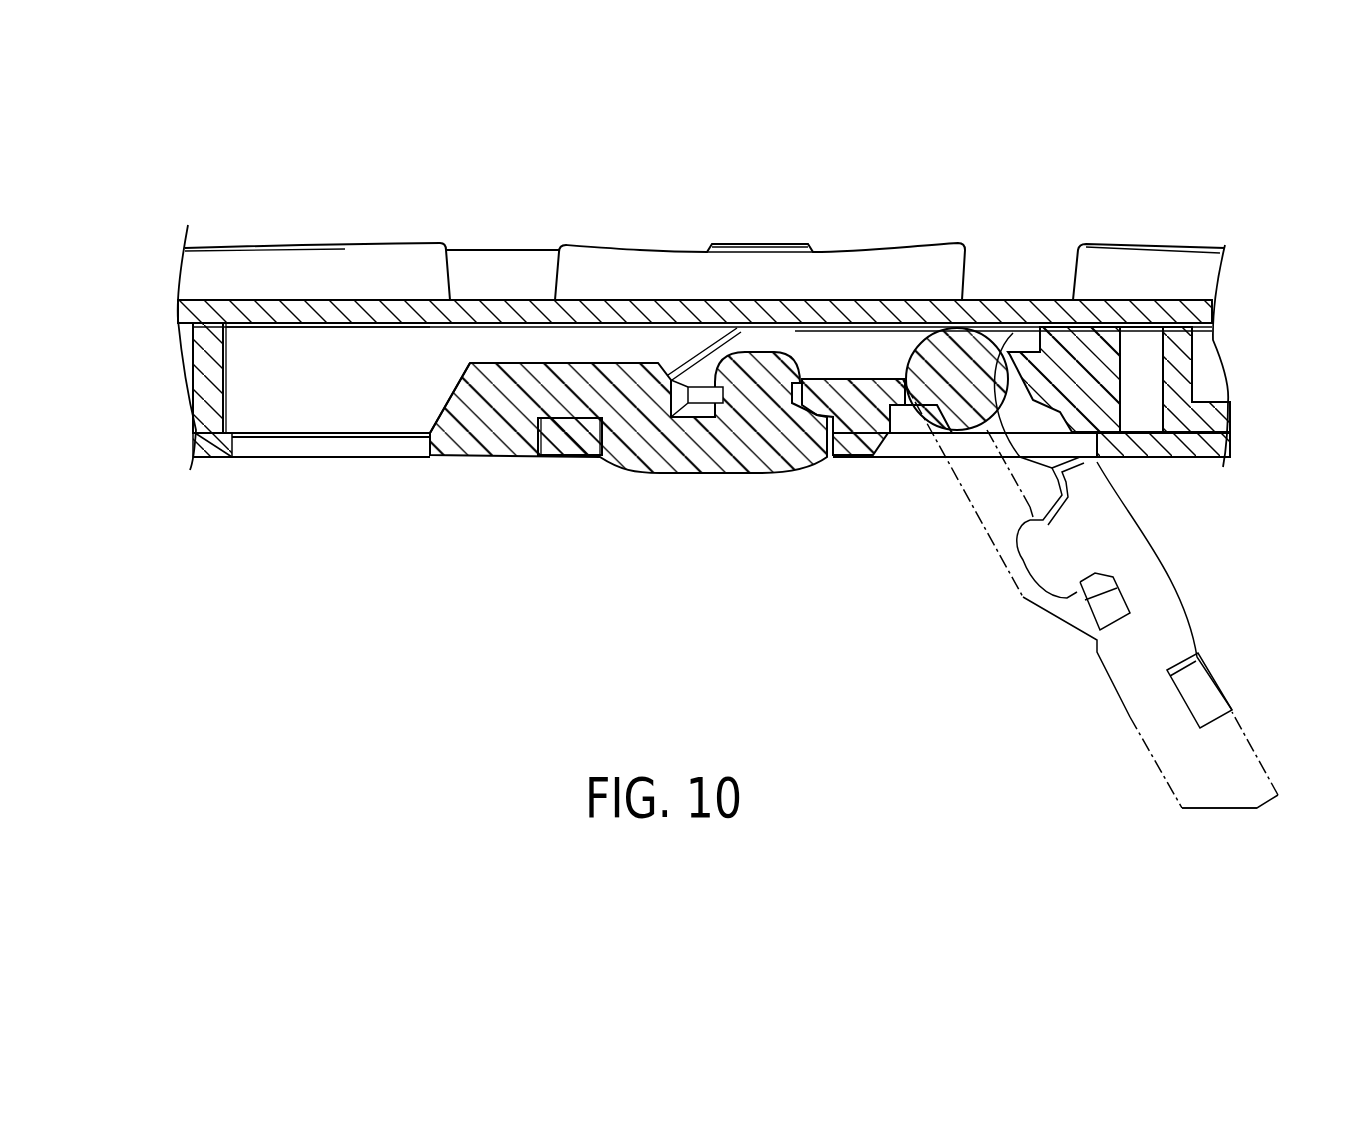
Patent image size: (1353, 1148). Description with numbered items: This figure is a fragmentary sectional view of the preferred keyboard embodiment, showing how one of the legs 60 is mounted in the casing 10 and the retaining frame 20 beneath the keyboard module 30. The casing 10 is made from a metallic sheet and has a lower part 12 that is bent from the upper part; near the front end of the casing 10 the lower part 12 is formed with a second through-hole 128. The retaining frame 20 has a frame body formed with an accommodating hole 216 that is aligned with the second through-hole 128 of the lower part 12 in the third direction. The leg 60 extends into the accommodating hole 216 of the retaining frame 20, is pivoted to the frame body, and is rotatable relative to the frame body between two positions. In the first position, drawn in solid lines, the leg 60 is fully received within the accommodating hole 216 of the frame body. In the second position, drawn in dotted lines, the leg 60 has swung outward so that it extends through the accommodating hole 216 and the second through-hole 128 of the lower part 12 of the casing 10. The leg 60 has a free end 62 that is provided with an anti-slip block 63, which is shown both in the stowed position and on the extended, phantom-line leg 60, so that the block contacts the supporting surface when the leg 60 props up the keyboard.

The casing 10 is at (212, 457).
The lower part 12 is at (201, 440).
The retaining frame 20 is at (201, 408).
The keyboard module 30 is at (360, 258).
The leg 60 is at (670, 473).
The free end 62 is at (580, 443).
The anti-slip block 63 is at (453, 411).
The second through-hole 128 is at (250, 456).
The accommodating hole 216 is at (287, 378).